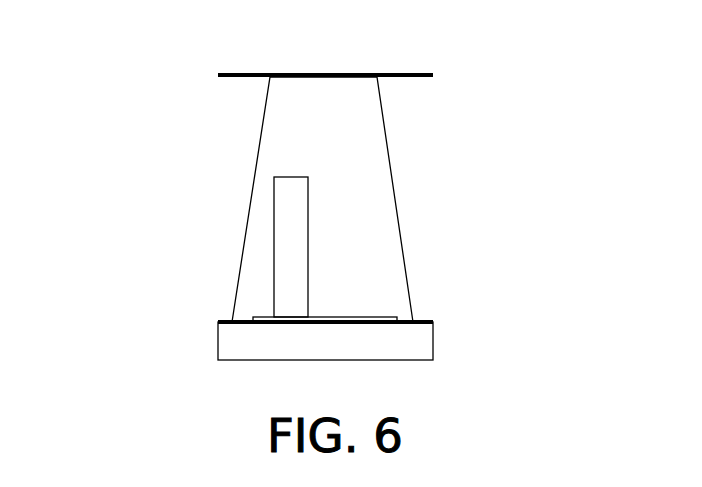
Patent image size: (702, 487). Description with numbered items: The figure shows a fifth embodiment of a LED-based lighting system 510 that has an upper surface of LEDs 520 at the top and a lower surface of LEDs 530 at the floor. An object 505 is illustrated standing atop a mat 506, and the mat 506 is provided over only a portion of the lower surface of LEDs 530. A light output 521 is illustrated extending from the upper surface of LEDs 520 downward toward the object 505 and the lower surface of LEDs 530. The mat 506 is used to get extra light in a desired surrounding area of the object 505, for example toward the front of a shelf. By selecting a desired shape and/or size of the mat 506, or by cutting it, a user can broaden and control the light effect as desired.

The LED-based lighting system 510 is at (118, 80).
The upper surface of LEDs 520 is at (462, 80).
The lower surface of LEDs 530 is at (462, 318).
The light output 521 is at (285, 130).
The object 505 is at (285, 250).
The mat 506 is at (262, 320).